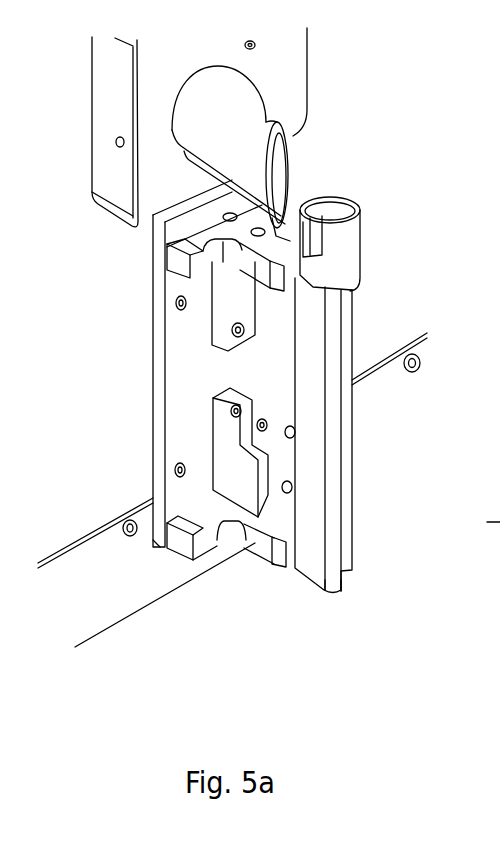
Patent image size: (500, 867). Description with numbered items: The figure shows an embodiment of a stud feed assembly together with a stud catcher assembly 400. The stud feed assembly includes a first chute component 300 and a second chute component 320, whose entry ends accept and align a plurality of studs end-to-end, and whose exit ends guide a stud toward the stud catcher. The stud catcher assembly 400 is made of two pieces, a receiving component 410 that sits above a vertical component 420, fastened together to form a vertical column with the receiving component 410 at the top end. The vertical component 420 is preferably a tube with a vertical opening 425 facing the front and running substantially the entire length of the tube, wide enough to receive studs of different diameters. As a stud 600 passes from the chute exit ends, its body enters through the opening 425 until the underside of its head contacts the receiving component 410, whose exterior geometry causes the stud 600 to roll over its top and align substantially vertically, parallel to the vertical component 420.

The first chute component 300 is at (266, 112).
The stud 600 is at (289, 195).
The second chute component 320 is at (215, 187).
The stud catcher assembly 400 is at (385, 413).
The receiving component 410 is at (358, 243).
The vertical component 420 is at (313, 508).
The vertical opening 425 is at (347, 582).